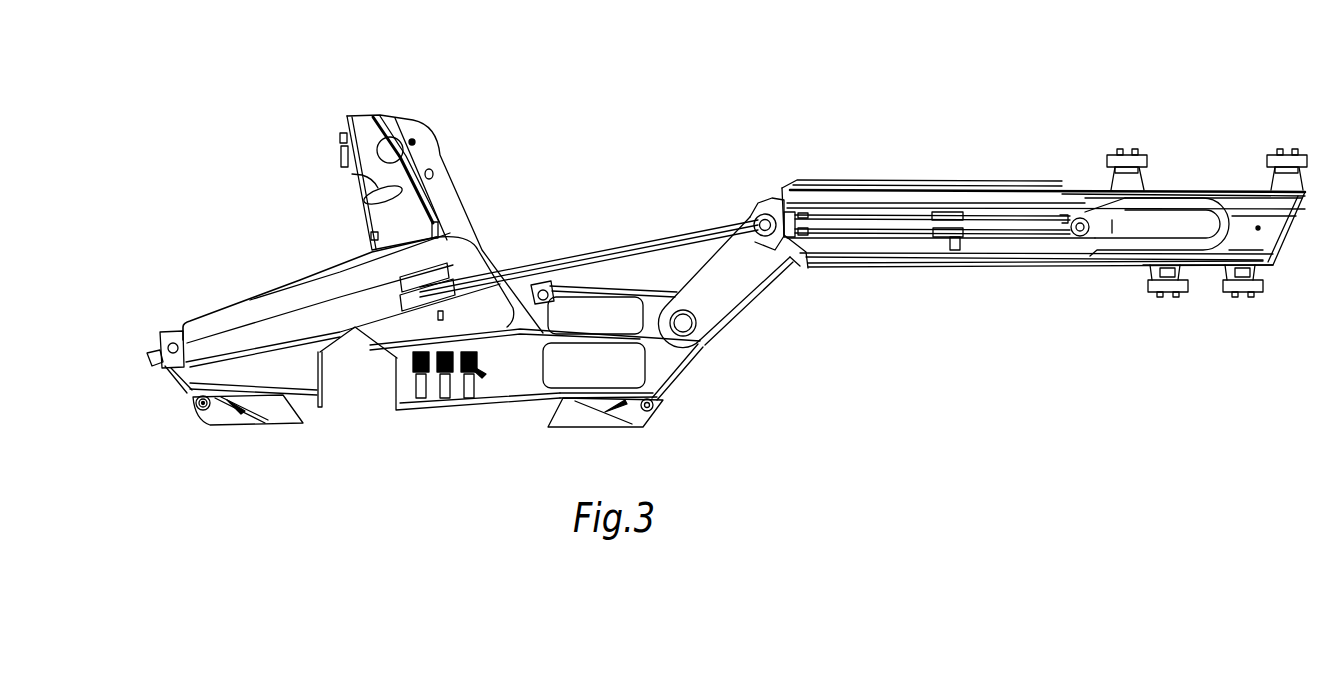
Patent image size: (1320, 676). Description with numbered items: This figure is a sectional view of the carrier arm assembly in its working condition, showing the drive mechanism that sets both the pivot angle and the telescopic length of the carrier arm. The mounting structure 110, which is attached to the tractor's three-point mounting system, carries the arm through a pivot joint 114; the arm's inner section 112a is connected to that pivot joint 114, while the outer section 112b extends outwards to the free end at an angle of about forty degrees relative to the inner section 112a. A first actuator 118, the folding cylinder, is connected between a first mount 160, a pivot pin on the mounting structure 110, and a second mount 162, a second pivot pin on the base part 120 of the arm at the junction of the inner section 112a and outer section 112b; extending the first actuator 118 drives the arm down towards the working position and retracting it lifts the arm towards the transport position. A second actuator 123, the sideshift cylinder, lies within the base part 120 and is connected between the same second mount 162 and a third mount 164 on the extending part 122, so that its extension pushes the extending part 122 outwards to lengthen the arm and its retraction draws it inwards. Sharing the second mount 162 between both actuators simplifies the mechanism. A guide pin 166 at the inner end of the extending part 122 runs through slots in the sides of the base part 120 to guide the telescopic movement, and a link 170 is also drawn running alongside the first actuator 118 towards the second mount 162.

The mounting structure 110 is at (426, 132).
The first actuator 118 is at (254, 320).
The first mount 160 is at (172, 348).
The connecting rod 170 is at (543, 286).
The second mount 162 is at (765, 218).
The base part 120 is at (923, 186).
The extending part 122 is at (1220, 190).
The guide pin 166 is at (799, 232).
The second actuator 123 is at (898, 238).
The outer section 112b is at (966, 270).
The third mount 164 is at (1082, 234).
The inner section 112a is at (762, 303).
The pivot joint 114 is at (686, 328).